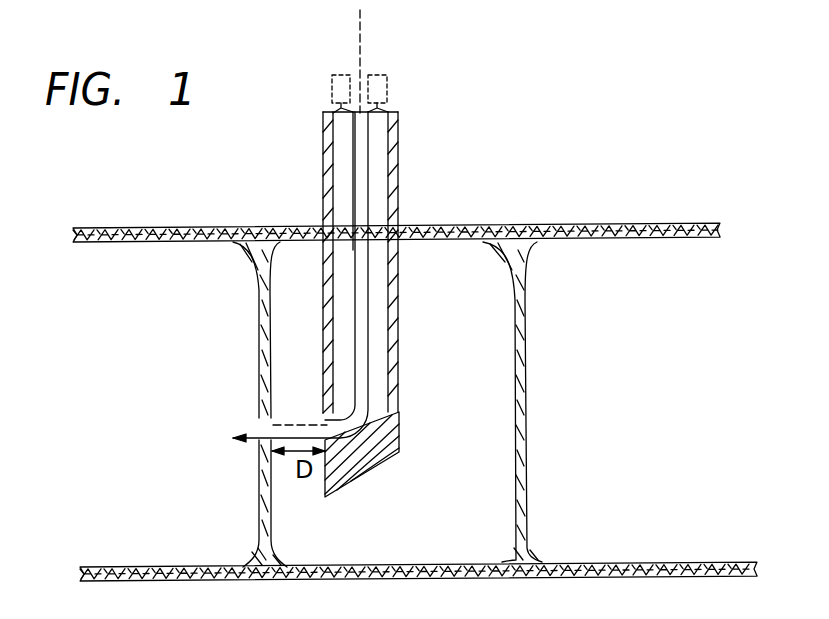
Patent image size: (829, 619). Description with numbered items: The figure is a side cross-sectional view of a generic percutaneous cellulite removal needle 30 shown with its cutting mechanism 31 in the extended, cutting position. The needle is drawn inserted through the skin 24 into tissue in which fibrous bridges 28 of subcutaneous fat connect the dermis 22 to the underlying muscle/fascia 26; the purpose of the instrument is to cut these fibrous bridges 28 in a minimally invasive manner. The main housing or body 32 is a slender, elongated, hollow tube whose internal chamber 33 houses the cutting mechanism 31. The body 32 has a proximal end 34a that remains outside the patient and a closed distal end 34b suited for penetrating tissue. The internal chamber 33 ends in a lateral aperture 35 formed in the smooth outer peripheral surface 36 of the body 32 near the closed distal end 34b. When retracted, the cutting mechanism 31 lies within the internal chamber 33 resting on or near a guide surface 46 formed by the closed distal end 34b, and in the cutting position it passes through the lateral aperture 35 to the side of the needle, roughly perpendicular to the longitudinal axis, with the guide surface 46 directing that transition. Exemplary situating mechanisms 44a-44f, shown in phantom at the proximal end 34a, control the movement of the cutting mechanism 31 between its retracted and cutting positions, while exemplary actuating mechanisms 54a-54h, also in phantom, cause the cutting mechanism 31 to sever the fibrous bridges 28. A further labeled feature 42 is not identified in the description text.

The dermis 22 is at (623, 223).
The skin 24 is at (650, 418).
The muscle/fascia 26 is at (640, 578).
The fibrous bridges 28 is at (525, 323).
The percutaneous cellulite removal needle 30 is at (435, 126).
The cutting mechanism 31 is at (240, 437).
The body 32 is at (398, 181).
The internal chamber 33 is at (345, 184).
The proximal end 34a is at (364, 70).
The closed distal end 34b is at (328, 498).
The lateral aperture 35 is at (326, 421).
The outer peripheral surface 36 is at (398, 318).
The passage 42 is at (368, 273).
The situating mechanisms 44a-44f is at (384, 74).
The guide surface 46 is at (385, 402).
The actuating mechanisms 54a-54h is at (340, 74).